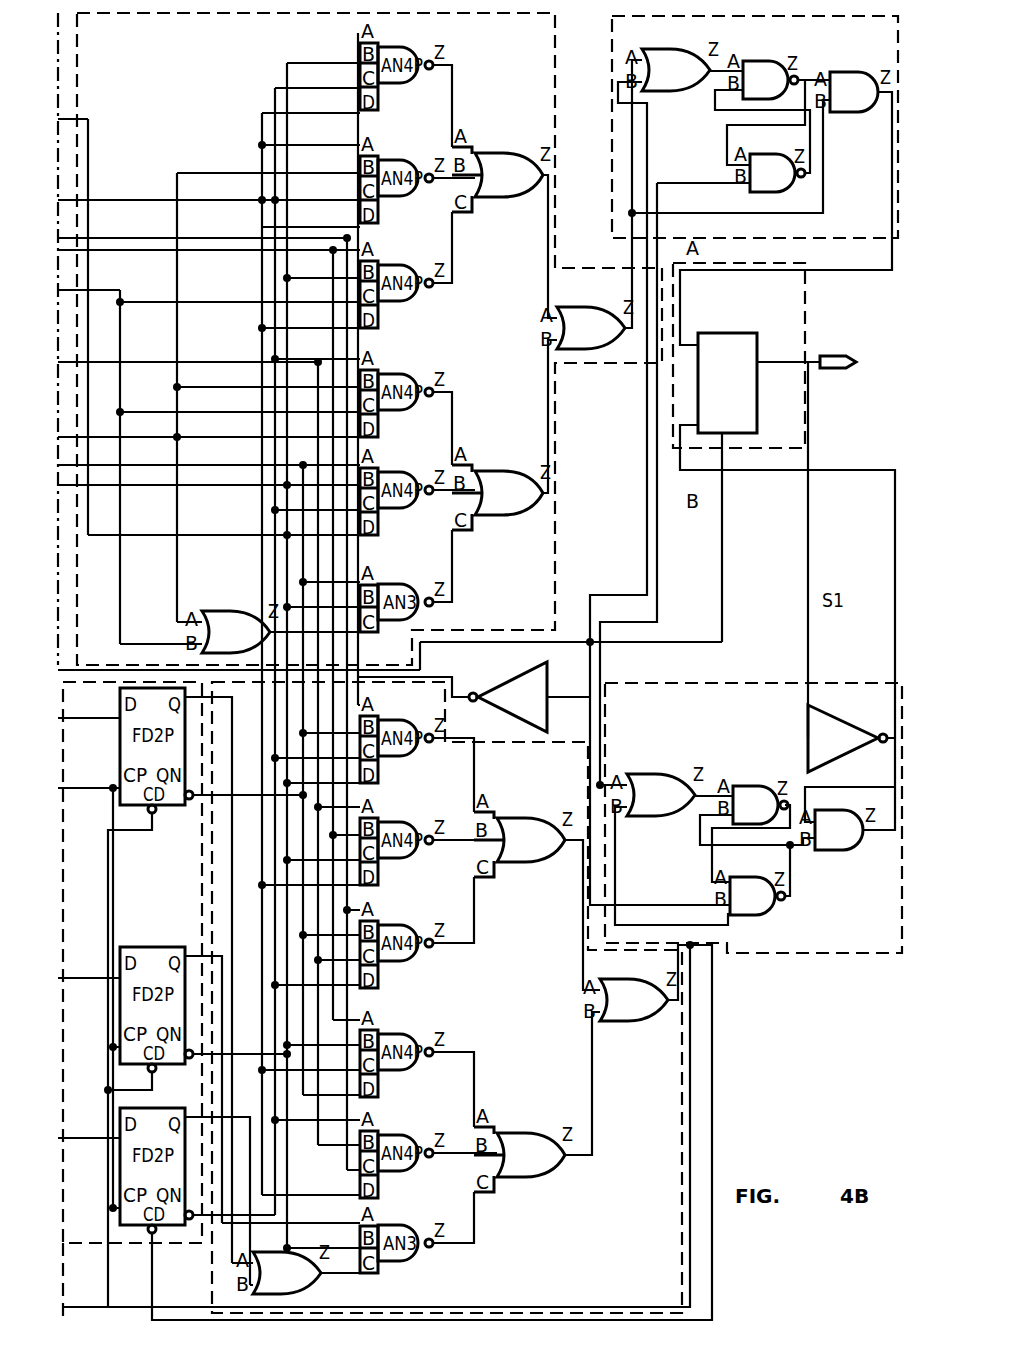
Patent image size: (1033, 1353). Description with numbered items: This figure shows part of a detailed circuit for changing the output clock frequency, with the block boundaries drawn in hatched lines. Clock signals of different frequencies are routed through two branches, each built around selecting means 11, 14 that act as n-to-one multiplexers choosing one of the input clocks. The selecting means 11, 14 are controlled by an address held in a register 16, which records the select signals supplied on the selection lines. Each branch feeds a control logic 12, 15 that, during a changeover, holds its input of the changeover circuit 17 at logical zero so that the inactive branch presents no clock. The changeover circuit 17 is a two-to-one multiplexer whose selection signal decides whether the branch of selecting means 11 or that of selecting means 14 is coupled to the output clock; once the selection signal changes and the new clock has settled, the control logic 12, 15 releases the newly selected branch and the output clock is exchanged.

The selecting means 11 is at (556, 88).
The control logic 12 is at (614, 38).
The selecting means 14 is at (650, 1258).
The control logic 15 is at (878, 940).
The register 16 is at (93, 1227).
The changeover circuit 17 is at (786, 333).